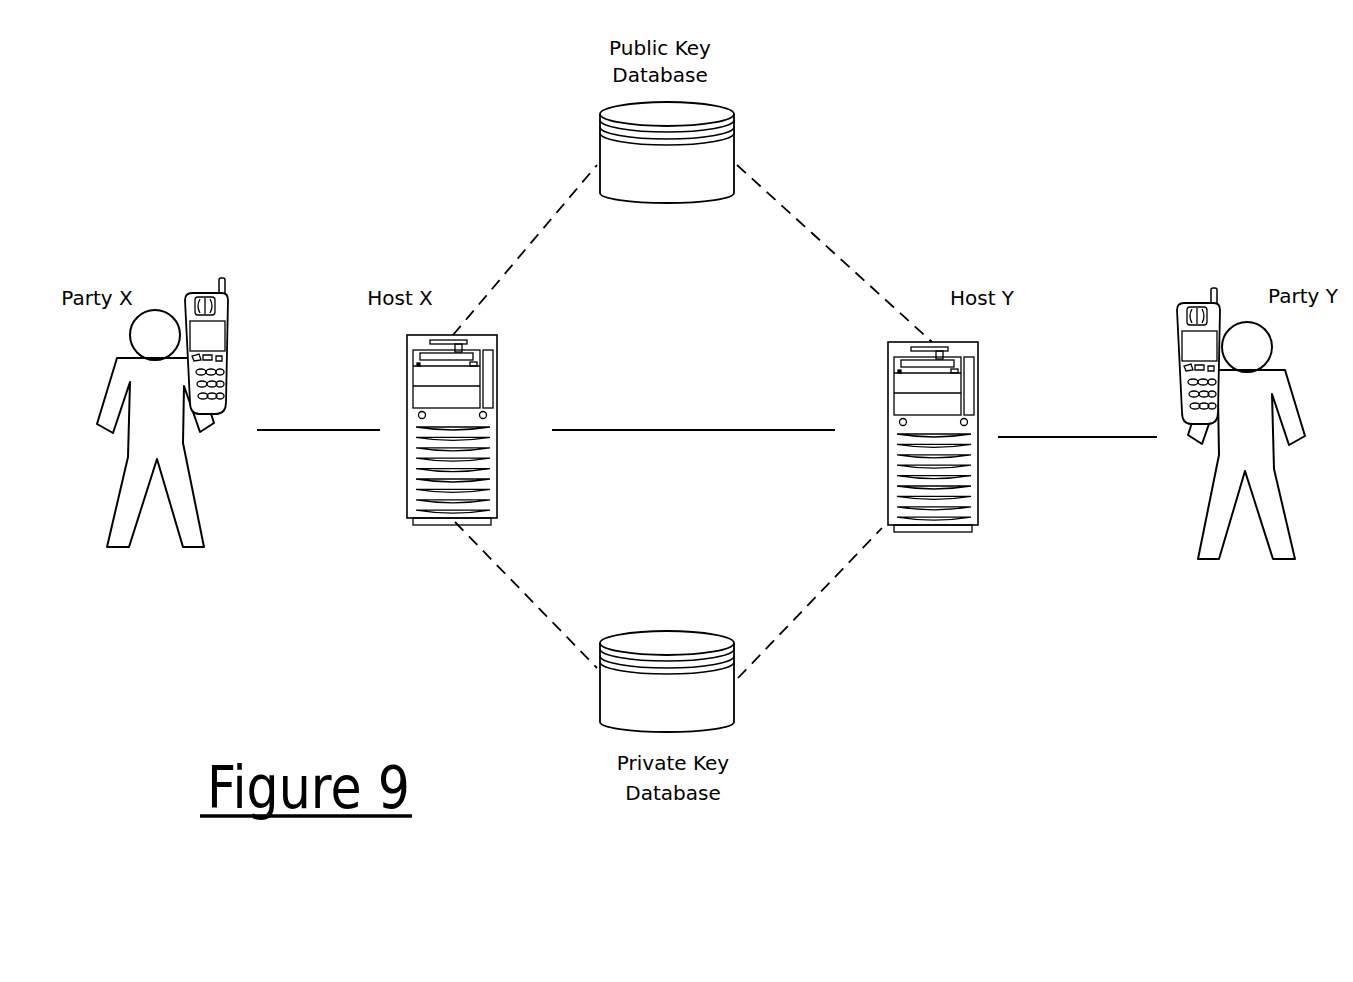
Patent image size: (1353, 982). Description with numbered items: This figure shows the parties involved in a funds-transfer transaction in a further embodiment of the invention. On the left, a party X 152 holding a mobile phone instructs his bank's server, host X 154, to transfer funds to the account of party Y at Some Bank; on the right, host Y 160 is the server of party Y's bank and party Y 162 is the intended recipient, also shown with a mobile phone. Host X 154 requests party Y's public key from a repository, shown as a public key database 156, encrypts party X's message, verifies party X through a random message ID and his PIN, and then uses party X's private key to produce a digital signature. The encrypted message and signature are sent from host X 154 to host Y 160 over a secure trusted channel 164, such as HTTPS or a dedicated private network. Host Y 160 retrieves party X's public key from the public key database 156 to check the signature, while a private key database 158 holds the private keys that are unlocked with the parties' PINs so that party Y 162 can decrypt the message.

The party X 152 is at (258, 465).
The host X 154 is at (498, 465).
The public key database 156 is at (613, 163).
The private key database 158 is at (720, 698).
The host Y computer 160 is at (967, 527).
The party Y with mobile phone 162 is at (1162, 467).
The secure trusted channel 164 is at (732, 430).